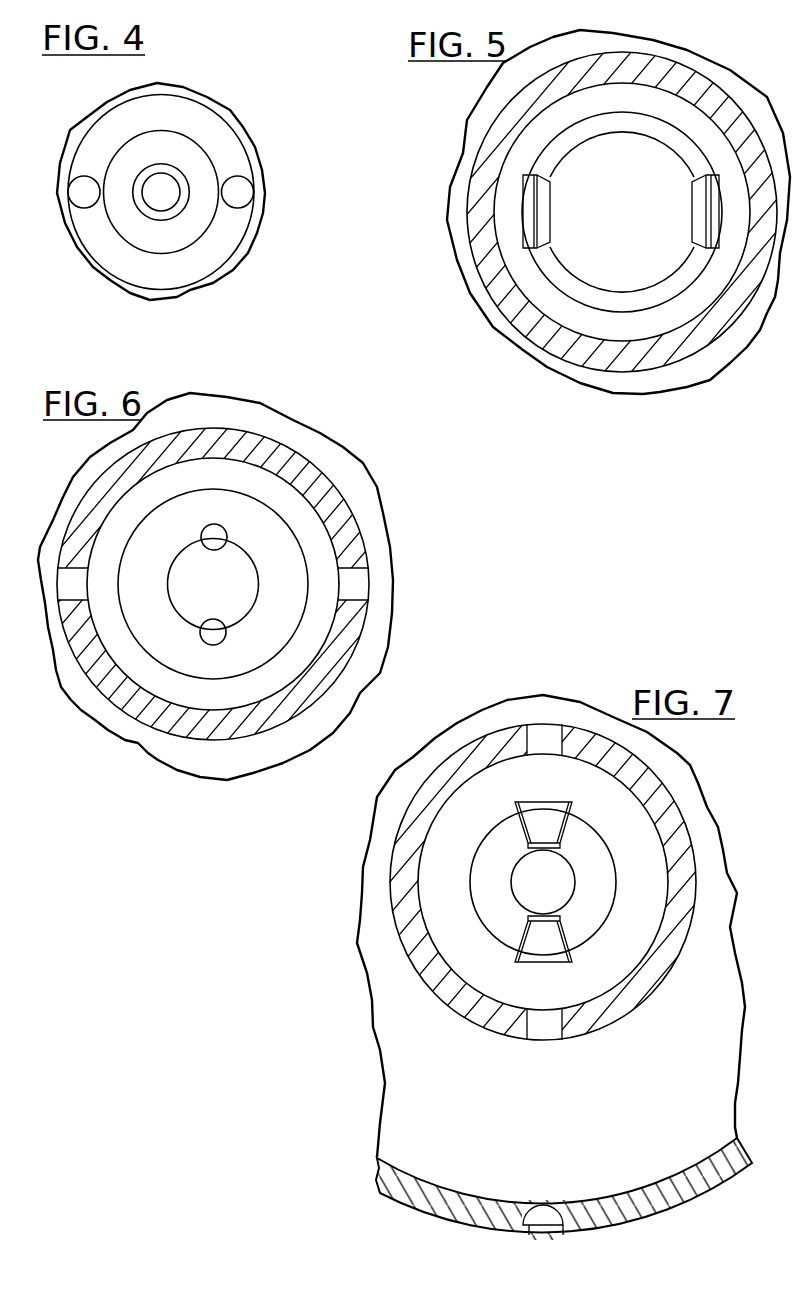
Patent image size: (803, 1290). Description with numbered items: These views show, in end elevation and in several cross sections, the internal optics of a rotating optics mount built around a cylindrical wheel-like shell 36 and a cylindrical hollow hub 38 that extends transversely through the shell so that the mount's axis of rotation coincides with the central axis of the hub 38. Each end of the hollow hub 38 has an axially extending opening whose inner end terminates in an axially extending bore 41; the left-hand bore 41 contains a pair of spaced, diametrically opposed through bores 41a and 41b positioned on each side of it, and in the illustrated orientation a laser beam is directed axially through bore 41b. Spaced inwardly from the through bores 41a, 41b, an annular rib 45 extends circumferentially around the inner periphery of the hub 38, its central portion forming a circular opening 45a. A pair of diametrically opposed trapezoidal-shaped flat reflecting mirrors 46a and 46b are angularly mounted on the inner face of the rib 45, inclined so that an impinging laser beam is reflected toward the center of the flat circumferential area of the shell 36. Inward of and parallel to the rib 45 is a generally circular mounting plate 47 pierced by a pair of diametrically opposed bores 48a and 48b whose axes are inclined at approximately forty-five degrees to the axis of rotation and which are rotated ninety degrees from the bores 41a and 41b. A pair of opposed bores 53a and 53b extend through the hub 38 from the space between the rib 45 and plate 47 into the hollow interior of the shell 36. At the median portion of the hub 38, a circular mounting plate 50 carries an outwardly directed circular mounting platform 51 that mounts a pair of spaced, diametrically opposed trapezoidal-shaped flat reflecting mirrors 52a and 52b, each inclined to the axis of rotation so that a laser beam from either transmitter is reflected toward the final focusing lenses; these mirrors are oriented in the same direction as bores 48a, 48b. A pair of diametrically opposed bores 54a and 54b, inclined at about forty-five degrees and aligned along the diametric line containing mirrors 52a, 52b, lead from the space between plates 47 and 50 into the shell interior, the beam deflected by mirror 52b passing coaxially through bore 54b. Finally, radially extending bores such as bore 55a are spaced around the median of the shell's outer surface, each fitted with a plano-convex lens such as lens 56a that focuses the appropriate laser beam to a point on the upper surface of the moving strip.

In FIG. 7, the cylindrical wheel-like shell 36 is at (408, 1203).
In FIG. 4, the hollow hub 38 is at (68, 226).
In FIG. 5, the hollow hub 38 is at (477, 235).
In FIG. 6, the hollow hub 38 is at (90, 668).
In FIG. 7, the hollow hub 38 is at (392, 870).
In FIG. 4, the axially extending bore 41 is at (170, 204).
In FIG. 4, the through bore 41a is at (77, 181).
In FIG. 4, the through bore 41b is at (244, 185).
In FIG. 5, the annular rib 45 is at (598, 297).
In FIG. 5, the circular opening 45a is at (633, 223).
In FIG. 5, the trapezoidal-shaped flat reflecting mirror 46a is at (548, 190).
In FIG. 5, the trapezoidal-shaped flat reflecting mirror 46b is at (697, 222).
In FIG. 6, the mounting plate 47 is at (175, 665).
In FIG. 6, the bore 48a is at (216, 528).
In FIG. 6, the bore 48b is at (218, 640).
In FIG. 6, the bore 53a is at (62, 583).
In FIG. 6, the bore 53b is at (357, 583).
In FIG. 7, the circular mounting plate 50 is at (462, 914).
In FIG. 7, the circular mounting platform 51 is at (487, 860).
In FIG. 7, the trapezoidal-shaped flat reflecting mirror 52a is at (533, 812).
In FIG. 7, the trapezoidal-shaped flat reflecting mirror 52b is at (540, 958).
In FIG. 7, the bore 54a is at (546, 730).
In FIG. 7, the bore 54b is at (556, 1022).
In FIG. 7, the radially extending bore 55a is at (557, 1207).
In FIG. 7, the plano-convex lens 56a is at (545, 1228).